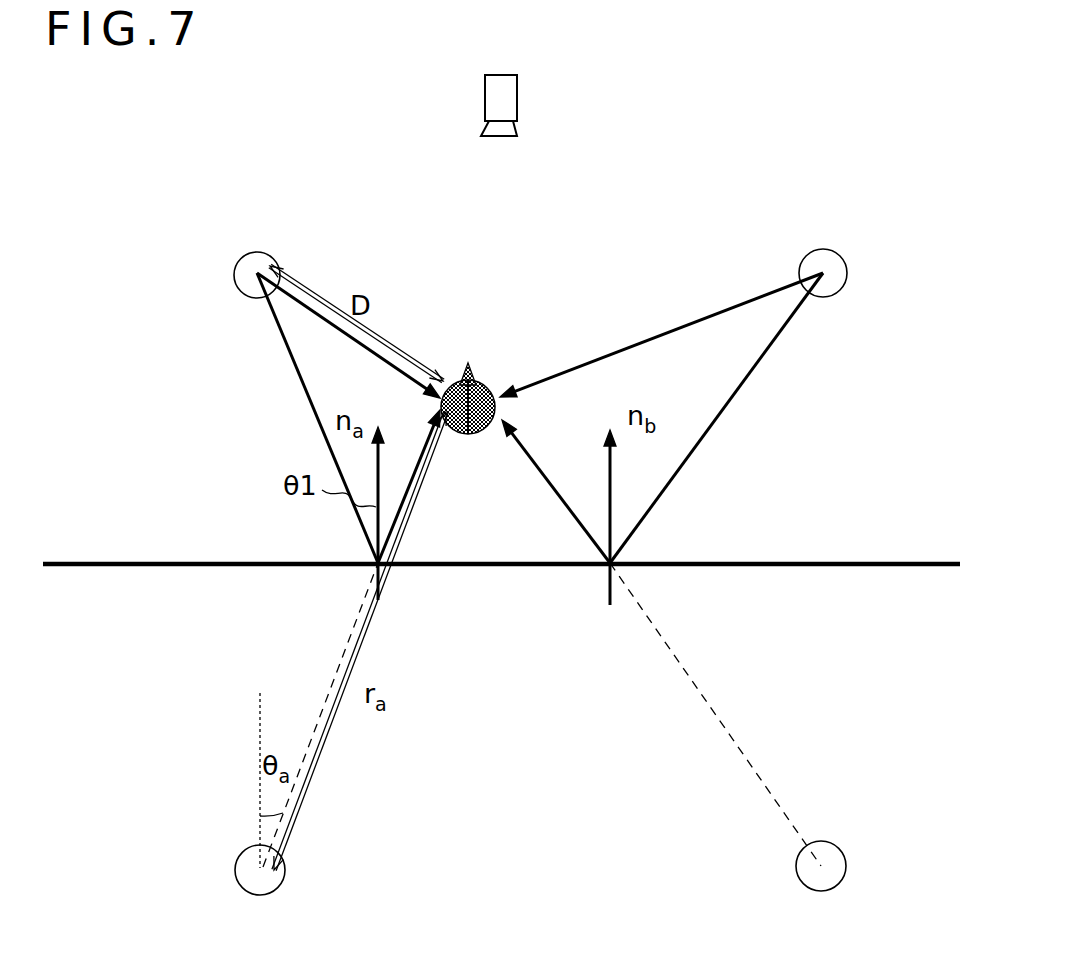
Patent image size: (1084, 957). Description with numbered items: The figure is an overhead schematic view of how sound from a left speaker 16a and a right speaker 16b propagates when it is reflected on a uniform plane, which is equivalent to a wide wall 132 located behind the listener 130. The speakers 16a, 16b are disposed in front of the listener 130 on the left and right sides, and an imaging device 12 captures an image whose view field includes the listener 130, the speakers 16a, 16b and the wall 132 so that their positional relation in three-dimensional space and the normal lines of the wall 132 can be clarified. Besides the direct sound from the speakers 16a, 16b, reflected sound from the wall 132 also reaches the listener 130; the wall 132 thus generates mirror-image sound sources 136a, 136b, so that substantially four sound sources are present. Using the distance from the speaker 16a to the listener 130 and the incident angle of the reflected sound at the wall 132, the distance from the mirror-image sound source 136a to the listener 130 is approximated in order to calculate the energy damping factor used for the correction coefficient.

The imaging device 12 is at (517, 101).
The left speaker 16a is at (264, 250).
The right speaker 16b is at (834, 250).
The listener 130 is at (486, 380).
The wall 132 is at (112, 560).
The mirror-image sound source 136a is at (238, 856).
The mirror-image sound source 136b is at (848, 852).